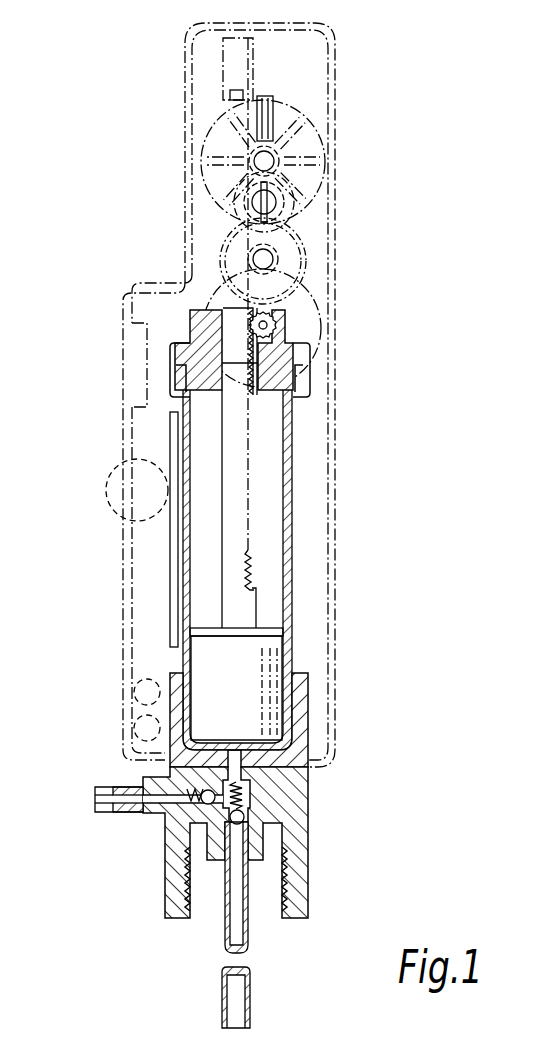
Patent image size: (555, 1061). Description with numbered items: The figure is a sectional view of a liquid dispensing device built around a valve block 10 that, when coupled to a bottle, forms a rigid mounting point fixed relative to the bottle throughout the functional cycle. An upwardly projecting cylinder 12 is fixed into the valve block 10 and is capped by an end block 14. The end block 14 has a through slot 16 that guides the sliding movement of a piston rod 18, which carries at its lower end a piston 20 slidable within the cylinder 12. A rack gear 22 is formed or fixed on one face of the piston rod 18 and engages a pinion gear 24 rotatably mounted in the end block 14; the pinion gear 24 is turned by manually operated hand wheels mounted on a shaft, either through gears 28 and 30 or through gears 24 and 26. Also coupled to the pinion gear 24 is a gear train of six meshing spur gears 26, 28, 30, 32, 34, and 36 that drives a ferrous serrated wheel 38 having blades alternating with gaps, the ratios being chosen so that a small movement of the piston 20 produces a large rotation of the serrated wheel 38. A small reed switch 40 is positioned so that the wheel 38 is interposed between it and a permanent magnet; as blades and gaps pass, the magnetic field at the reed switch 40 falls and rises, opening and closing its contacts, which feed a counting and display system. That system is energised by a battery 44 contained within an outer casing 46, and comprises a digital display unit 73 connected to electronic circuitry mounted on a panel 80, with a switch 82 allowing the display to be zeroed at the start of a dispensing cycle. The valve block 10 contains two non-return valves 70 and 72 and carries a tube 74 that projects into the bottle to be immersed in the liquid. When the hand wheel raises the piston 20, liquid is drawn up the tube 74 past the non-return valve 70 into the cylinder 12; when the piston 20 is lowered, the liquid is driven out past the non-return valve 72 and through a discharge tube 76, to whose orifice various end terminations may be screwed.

The valve block 10 is at (300, 824).
The cylinder 12 is at (295, 535).
The end block 14 is at (197, 318).
The through slot 16 is at (222, 390).
The piston rod 18 is at (233, 60).
The piston 20 is at (286, 648).
The rack gear 22 is at (252, 574).
The pinion gear 24 is at (276, 313).
The spur gear 26 is at (318, 300).
The spur gear 28 is at (280, 259).
The spur gear 30 is at (306, 238).
The spur gear 32 is at (290, 225).
The spur gear 34 is at (281, 197).
The spur gear 36 is at (277, 157).
The ferrous serrated wheel 38 is at (212, 130).
The reed switch 40 is at (270, 96).
The battery 44 is at (136, 726).
The outer casing 46 is at (124, 640).
The non-return valve 70 is at (243, 826).
The non-return valve 72 is at (202, 802).
The digital display unit 73 is at (130, 357).
The tube 74 is at (222, 1000).
The discharge tube 76 is at (106, 812).
The panel 80 is at (172, 592).
The switch 82 is at (120, 478).